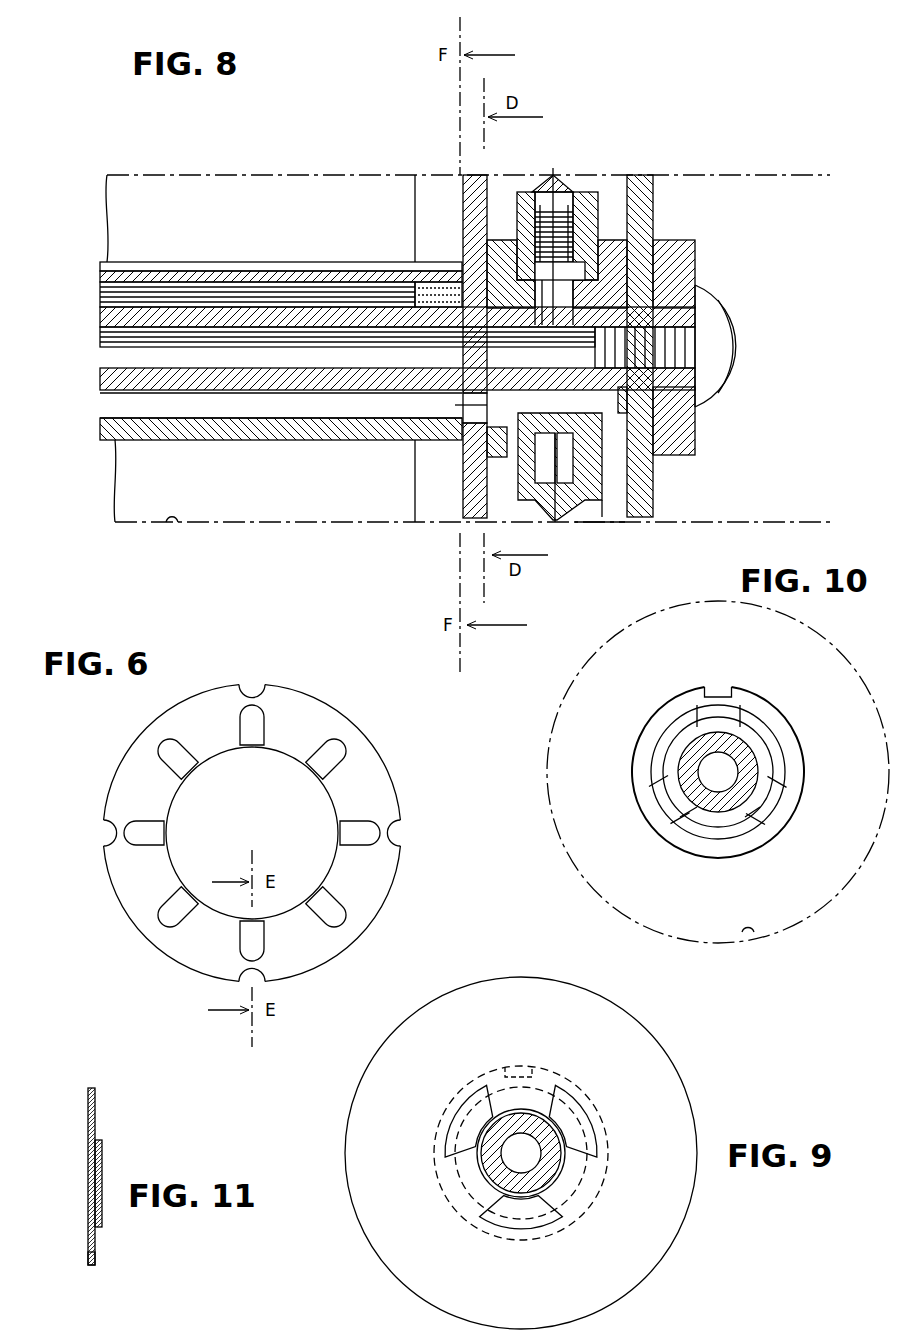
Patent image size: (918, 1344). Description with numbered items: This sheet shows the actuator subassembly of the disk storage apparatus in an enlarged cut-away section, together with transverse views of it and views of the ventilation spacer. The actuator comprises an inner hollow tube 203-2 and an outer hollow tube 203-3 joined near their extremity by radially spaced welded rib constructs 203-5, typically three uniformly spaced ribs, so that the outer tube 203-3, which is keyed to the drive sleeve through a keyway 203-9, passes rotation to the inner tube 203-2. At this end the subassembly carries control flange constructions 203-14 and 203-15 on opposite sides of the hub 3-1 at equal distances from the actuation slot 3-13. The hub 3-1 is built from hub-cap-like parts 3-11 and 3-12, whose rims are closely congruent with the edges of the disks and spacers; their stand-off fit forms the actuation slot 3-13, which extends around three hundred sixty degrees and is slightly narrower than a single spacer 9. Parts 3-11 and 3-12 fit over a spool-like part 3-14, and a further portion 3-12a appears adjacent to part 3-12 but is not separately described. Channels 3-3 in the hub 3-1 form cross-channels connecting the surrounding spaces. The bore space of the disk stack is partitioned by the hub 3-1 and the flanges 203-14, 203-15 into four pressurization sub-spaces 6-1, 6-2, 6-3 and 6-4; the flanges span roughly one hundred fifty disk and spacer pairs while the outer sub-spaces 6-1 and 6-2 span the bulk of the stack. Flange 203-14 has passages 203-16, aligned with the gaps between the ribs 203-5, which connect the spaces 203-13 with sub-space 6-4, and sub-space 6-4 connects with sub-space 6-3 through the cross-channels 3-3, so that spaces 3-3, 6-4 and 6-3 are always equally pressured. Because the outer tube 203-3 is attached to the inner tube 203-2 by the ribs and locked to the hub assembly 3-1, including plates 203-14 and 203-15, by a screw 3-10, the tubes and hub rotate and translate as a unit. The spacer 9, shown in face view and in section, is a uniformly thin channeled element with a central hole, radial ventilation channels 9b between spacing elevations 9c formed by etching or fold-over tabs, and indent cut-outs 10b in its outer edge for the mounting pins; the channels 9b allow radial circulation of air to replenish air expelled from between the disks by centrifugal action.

In FIG. 8, the inner hollow tube 203-2 is at (228, 315).
In FIG. 10, the inner hollow tube 203-2 is at (687, 762).
In FIG. 9, the inner hollow tube 203-2 is at (492, 1177).
In FIG. 8, the outer hollow tube 203-3 is at (303, 433).
In FIG. 10, the outer hollow tube 203-3 is at (793, 752).
In FIG. 9, the outer hollow tube 203-3 is at (438, 1120).
In FIG. 8, the welded rib constructs 203-5 is at (432, 292).
In FIG. 10, the welded rib constructs 203-5 is at (760, 807).
In FIG. 8, the keyway 203-9 is at (140, 268).
In FIG. 10, the keyway 203-9 is at (713, 695).
In FIG. 9, the keyway 203-9 is at (520, 1070).
In FIG. 8, the spaces 203-13 is at (208, 410).
In FIG. 8, the control flange construction 203-14 is at (480, 187).
In FIG. 9, the control flange construction 203-14 is at (670, 1083).
In FIG. 8, the control flange construction 203-15 is at (648, 214).
In FIG. 8, the passages 203-16 is at (470, 405).
In FIG. 10, the passages 203-16 is at (667, 753).
In FIG. 9, the passages 203-16 is at (522, 1212).
In FIG. 8, the hub 3-1 is at (589, 530).
In FIG. 8, the channels 3-3 is at (542, 408).
In FIG. 8, the screw 3-10 is at (724, 331).
In FIG. 8, the hub-cap-like part 3-11 is at (535, 215).
In FIG. 8, the hub-cap-like part 3-12 is at (610, 190).
In FIG. 8, the hub block 3-12a is at (685, 267).
In FIG. 8, the actuation slot 3-13 is at (556, 172).
In FIG. 8, the spool-like part 3-14 is at (497, 262).
In FIG. 8, the pressurization sub-space 6-1 is at (712, 491).
In FIG. 8, the pressurization sub-space 6-2 is at (424, 491).
In FIG. 8, the pressurization sub-space 6-3 is at (615, 508).
In FIG. 8, the pressurization sub-space 6-4 is at (490, 491).
In FIG. 6, the channeled spacer 9 is at (383, 763).
In FIG. 11, the channeled spacer 9 is at (95, 1103).
In FIG. 6, the radial ventilation channels 9b is at (197, 933).
In FIG. 6, the spacing elevations 9c is at (147, 827).
In FIG. 11, the spacing elevations 9c is at (102, 1160).
In FIG. 6, the indent cut-outs 10b is at (247, 687).
In FIG. 11, the indent cut-outs 10b is at (95, 1252).